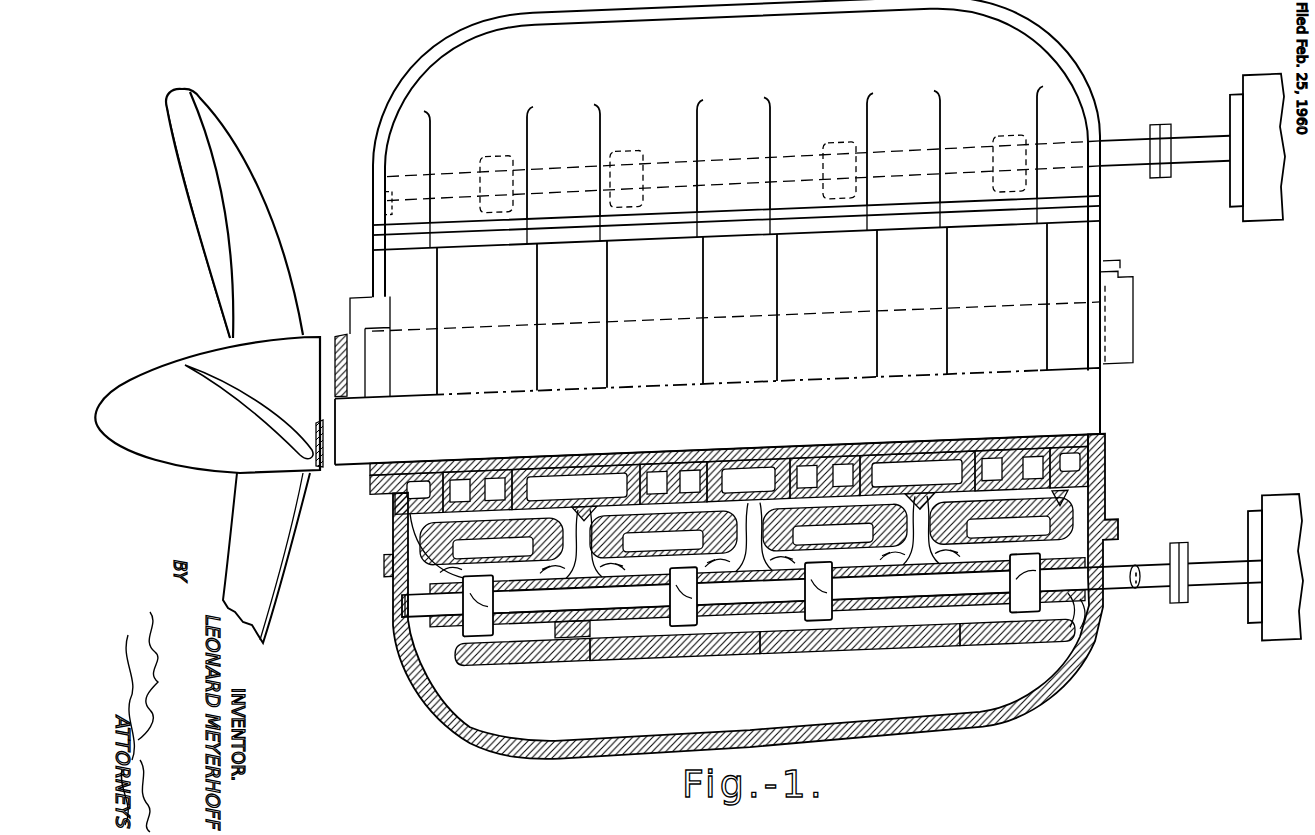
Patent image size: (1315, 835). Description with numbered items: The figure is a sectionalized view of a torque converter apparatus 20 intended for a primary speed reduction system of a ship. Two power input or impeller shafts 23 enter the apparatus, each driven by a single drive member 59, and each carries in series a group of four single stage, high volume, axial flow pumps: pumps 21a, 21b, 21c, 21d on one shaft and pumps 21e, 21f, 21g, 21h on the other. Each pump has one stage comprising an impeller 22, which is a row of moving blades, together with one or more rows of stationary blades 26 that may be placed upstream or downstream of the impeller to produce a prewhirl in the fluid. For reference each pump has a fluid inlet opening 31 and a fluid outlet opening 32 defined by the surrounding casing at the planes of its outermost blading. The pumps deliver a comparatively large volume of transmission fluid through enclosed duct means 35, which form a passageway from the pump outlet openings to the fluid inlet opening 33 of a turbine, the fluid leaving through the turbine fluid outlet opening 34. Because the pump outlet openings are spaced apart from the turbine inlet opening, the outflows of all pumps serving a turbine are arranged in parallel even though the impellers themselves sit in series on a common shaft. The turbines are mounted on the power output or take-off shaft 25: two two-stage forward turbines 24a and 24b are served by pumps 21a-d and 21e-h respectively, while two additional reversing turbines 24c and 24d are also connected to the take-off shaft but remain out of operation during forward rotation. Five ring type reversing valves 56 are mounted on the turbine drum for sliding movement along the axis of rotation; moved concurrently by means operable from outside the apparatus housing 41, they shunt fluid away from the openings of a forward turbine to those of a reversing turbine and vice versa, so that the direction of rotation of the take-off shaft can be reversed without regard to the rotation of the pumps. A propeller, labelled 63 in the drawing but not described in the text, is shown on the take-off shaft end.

The torque converter apparatus 20 is at (1133, 412).
The pump 21a is at (516, 645).
The pump 21b is at (493, 152).
The pump 21c is at (636, 150).
The pump 21d is at (655, 636).
The pump 21e is at (856, 622).
The pump 21f is at (826, 140).
The pump 21g is at (995, 133).
The pump 21h is at (1030, 616).
The impeller 22 is at (554, 650).
The impeller shaft 23 is at (1073, 150).
The turbine 24a is at (487, 468).
The turbine 24b is at (833, 457).
The turbine 24c is at (692, 467).
The turbine 24d is at (1024, 457).
The take-off shaft 25 is at (347, 335).
The stationary blades 26 is at (470, 605).
The fluid inlet opening 31 is at (405, 564).
The fluid outlet opening 32 is at (653, 535).
The fluid inlet opening 33 is at (536, 508).
The fluid outlet opening 34 is at (412, 514).
The enclosed duct means 35 is at (570, 630).
The apparatus housing 41 is at (1063, 58).
The ring type reversing valves 56 is at (930, 494).
The drive member 59 is at (1243, 85).
The propeller 63 is at (200, 188).